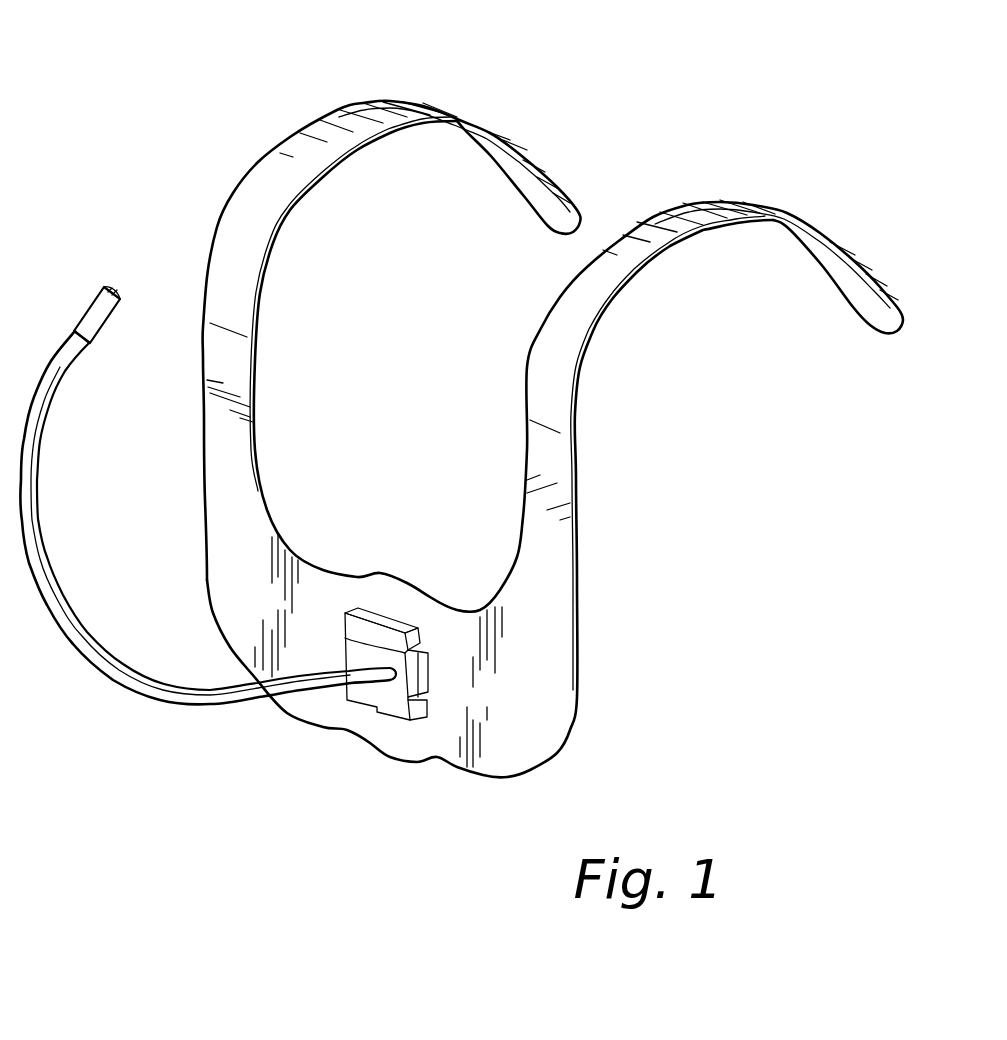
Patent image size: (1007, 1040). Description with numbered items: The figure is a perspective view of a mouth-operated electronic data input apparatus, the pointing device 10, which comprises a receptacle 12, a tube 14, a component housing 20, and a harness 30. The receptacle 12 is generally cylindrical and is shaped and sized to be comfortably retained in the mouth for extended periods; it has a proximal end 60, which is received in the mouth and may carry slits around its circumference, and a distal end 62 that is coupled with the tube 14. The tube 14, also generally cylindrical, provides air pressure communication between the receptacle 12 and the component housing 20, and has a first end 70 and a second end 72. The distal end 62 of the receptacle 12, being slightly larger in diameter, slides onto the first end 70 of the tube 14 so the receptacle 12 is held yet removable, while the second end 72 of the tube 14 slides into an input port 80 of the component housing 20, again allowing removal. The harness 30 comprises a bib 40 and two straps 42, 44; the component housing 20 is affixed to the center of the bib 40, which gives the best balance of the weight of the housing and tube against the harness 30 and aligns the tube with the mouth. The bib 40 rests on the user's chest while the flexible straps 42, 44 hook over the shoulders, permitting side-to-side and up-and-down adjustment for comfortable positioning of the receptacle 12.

The pointing device 10 is at (118, 79).
The receptacle 12 is at (59, 262).
The tube 14 is at (88, 697).
The component housing 20 is at (411, 740).
The harness 30 is at (553, 394).
The bib 40 is at (328, 555).
The strap 42 is at (365, 102).
The strap 44 is at (710, 198).
The proximal end 60 is at (106, 287).
The distal end 62 is at (76, 333).
The first end 70 is at (88, 366).
The second end 72 is at (375, 705).
The input port 80 is at (378, 655).